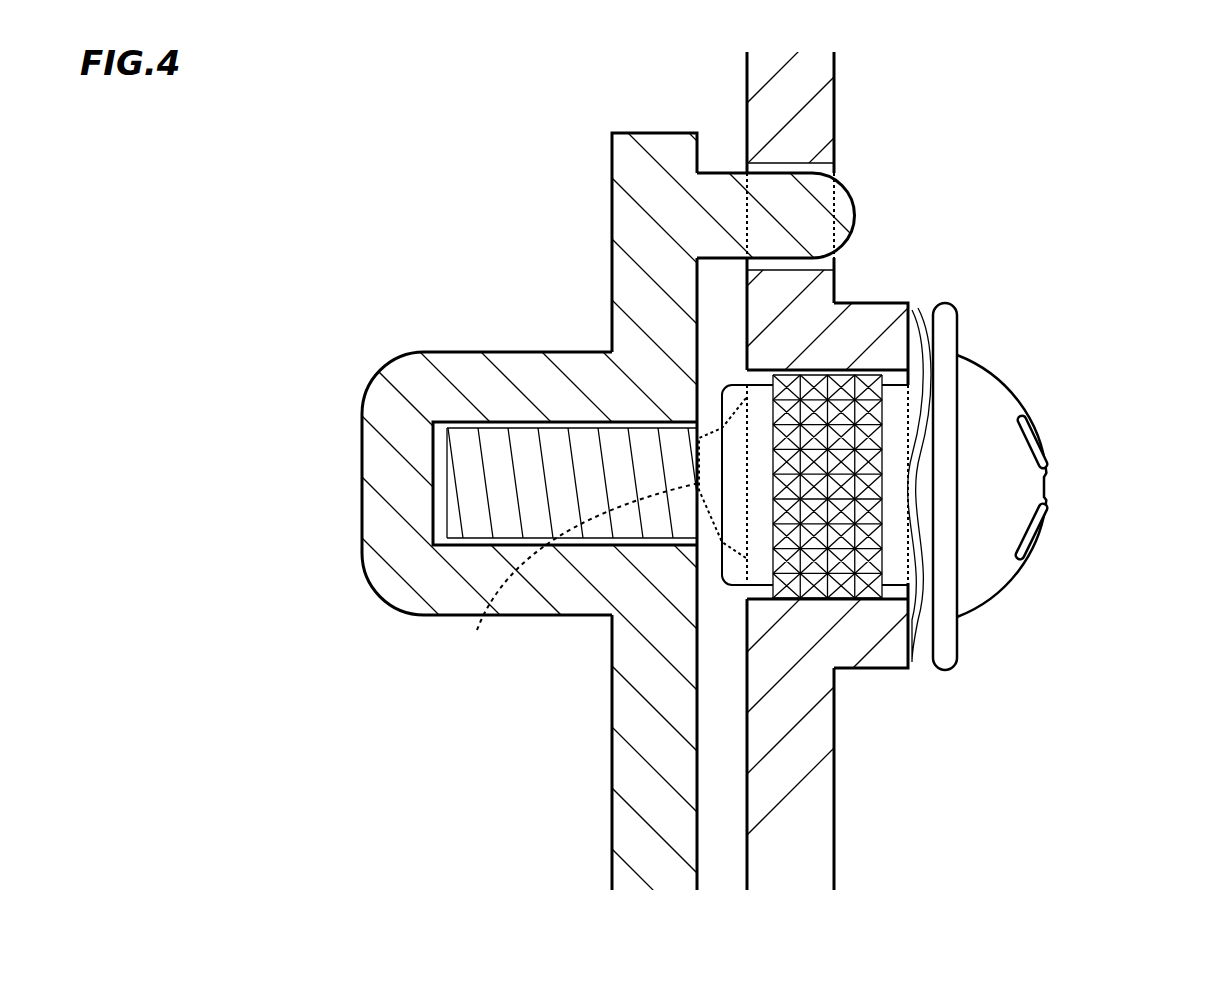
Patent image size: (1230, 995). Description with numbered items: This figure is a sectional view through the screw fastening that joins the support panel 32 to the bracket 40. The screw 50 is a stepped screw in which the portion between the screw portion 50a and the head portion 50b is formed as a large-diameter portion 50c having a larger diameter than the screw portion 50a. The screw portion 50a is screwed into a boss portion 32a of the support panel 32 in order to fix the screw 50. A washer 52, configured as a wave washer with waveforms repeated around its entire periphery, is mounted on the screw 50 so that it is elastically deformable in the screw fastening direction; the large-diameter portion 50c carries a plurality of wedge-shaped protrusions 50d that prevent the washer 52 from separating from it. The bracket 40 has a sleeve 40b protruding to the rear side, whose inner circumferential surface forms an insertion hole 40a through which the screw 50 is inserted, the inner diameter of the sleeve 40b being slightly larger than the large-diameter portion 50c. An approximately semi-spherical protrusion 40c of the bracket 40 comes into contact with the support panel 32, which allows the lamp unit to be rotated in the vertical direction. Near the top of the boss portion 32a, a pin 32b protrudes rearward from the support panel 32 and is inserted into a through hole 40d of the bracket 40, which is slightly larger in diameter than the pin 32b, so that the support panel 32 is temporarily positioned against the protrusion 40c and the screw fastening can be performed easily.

The support panel 32 is at (596, 779).
The boss portion 32a is at (378, 532).
The pin 32b is at (805, 222).
The bracket 40 is at (849, 779).
The insertion hole 40a is at (770, 592).
The sleeve 40b is at (883, 657).
The protrusion 40c is at (597, 527).
The through hole 40d is at (797, 165).
The screw 50 is at (1050, 403).
The screw portion 50a is at (557, 445).
The head portion 50b is at (1012, 387).
The large-diameter portion 50c is at (737, 406).
The wedge-shaped protrusion 50d is at (817, 372).
The washer 52 is at (925, 580).